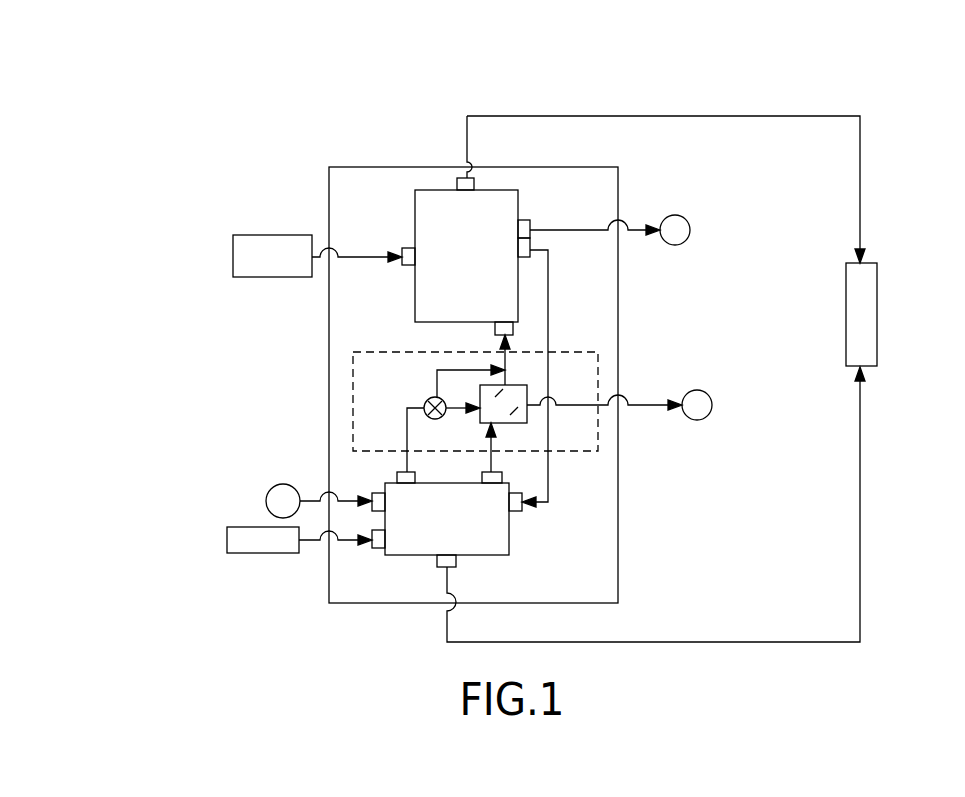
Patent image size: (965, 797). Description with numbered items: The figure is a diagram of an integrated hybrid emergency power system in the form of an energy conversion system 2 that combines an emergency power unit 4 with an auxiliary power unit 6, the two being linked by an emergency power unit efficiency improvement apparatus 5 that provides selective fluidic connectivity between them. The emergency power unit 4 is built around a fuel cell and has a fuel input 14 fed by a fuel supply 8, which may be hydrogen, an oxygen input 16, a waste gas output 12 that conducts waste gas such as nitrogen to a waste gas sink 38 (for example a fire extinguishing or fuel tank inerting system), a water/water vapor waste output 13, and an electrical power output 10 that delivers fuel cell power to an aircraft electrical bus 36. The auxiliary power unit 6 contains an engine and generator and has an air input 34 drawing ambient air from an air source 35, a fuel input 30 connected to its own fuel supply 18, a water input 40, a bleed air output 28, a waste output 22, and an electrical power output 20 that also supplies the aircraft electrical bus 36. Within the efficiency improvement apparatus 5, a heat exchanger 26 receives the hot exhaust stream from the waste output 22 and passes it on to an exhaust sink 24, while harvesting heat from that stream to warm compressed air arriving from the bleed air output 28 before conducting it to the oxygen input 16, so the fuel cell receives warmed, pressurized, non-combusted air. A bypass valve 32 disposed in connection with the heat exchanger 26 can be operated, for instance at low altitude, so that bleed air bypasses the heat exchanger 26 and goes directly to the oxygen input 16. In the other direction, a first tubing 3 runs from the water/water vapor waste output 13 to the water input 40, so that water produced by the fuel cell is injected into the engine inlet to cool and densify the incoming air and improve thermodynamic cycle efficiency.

The energy conversion system 2 is at (662, 80).
The first tubing 3 is at (548, 321).
The emergency power unit 4 is at (485, 190).
The emergency power unit efficiency improvement apparatus 5 is at (598, 384).
The auxiliary power unit 6 is at (510, 537).
The fuel supply 8 is at (233, 250).
The electrical power output 10 is at (457, 180).
The waste gas output 12 is at (526, 220).
The water/water vapor waste output 13 is at (531, 255).
The fuel input 14 is at (404, 248).
The oxygen input 16 is at (496, 330).
The fuel supply 18 is at (227, 542).
The electrical power output 20 is at (457, 562).
The waste output 22 is at (503, 477).
The exhaust sink 24 is at (689, 391).
The heat exchanger 26 is at (527, 386).
The bleed air output 28 is at (397, 470).
The fuel input 30 is at (372, 547).
The bypass valve 32 is at (426, 400).
The air input 34 is at (378, 492).
The air source 35 is at (267, 499).
The aircraft electrical bus 36 is at (877, 276).
The waste gas sink 38 is at (666, 217).
The water input 40 is at (522, 508).